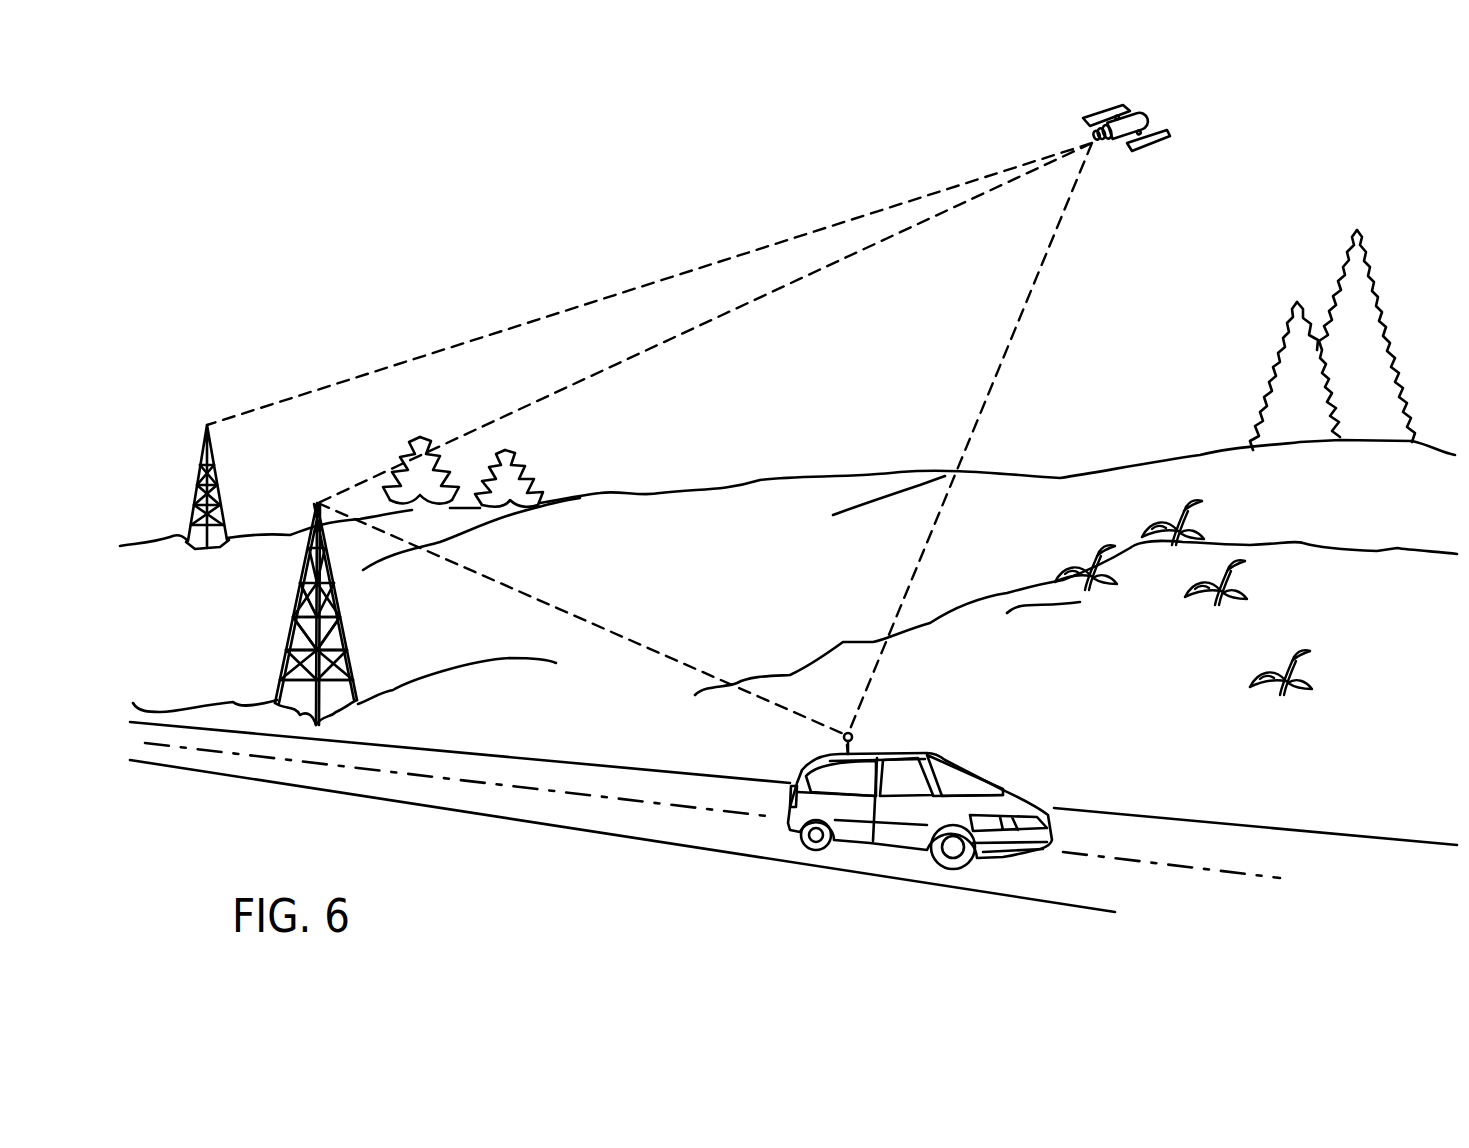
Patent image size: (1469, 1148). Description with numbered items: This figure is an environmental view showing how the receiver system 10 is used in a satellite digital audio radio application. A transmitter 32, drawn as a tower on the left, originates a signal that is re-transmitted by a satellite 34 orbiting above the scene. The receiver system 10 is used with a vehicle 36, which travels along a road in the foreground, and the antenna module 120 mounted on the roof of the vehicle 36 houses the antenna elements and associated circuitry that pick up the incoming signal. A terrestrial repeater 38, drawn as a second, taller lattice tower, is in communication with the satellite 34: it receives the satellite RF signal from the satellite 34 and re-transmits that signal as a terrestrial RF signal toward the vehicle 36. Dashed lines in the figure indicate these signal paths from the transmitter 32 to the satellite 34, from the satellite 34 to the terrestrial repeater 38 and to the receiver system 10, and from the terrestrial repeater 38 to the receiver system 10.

The receiver system 10 is at (812, 744).
The transmitter 32 is at (190, 497).
The satellite 34 is at (1113, 100).
The vehicle 36 is at (968, 765).
The terrestrial repeater 38 is at (290, 621).
The antenna module 120 is at (858, 741).